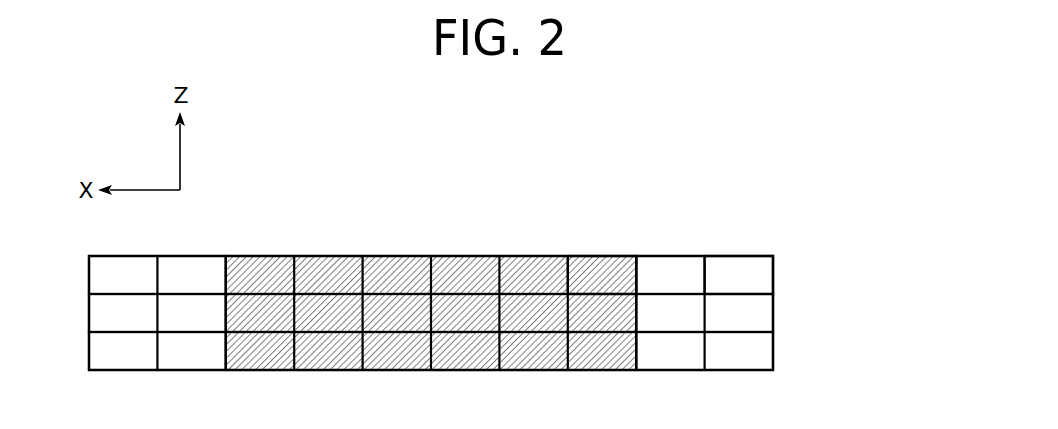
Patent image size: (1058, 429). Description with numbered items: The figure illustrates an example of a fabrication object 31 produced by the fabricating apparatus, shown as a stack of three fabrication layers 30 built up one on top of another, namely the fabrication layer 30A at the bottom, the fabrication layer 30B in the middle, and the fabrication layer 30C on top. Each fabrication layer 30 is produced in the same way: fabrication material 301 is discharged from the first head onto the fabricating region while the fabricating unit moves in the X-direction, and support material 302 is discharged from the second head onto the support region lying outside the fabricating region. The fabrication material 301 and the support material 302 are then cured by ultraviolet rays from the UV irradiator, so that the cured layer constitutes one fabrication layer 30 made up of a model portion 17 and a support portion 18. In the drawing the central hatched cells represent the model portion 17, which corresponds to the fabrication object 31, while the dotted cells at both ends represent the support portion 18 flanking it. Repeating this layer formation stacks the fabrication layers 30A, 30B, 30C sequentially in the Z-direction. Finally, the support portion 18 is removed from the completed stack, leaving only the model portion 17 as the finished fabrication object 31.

The fabrication layer 30 is at (503, 313).
The fabrication layer 30A is at (778, 353).
The fabrication layer 30B is at (778, 315).
The fabrication layer 30C is at (778, 277).
The model portion 17 is at (431, 342).
The fabrication object 31 is at (226, 371).
The support portion 18 is at (89, 371).
The fabrication material 301 is at (603, 267).
The support material 302 is at (738, 267).